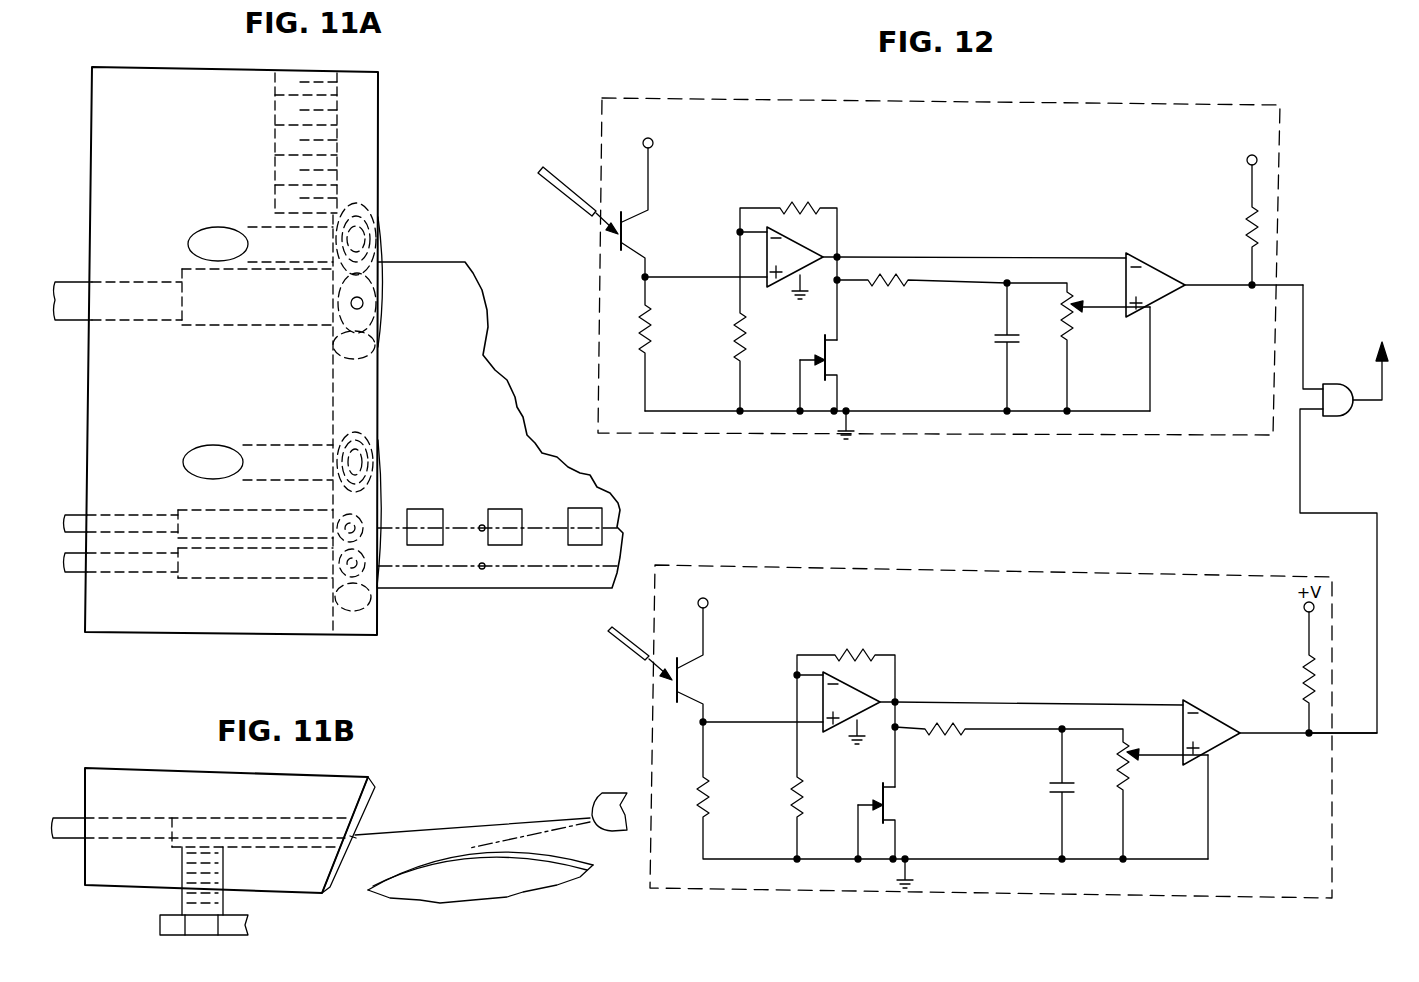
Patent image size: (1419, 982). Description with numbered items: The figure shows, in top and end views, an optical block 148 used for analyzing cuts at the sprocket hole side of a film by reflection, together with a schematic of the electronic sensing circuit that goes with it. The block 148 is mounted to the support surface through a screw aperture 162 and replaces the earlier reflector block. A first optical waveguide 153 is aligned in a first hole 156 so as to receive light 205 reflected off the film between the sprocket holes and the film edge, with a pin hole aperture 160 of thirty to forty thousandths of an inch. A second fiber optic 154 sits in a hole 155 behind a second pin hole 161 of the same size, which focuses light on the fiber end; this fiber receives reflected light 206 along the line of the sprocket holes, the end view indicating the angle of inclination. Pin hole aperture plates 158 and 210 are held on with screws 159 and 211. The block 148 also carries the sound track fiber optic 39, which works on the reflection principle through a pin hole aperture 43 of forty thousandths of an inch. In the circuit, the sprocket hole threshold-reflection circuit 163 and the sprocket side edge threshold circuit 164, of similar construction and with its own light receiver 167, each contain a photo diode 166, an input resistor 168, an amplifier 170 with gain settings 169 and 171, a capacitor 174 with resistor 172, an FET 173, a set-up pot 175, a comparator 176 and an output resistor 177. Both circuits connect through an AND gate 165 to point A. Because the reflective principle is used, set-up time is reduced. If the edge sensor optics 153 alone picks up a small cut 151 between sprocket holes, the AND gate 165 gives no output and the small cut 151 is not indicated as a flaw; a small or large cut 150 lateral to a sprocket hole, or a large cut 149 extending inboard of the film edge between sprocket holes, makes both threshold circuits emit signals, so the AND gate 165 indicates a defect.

In FIG. 11A, the optical block 148 is at (153, 66).
In FIG. 11B, the optical block 148 is at (115, 764).
In FIG. 11A, the screw aperture 162 is at (283, 147).
In FIG. 11A, the screw 211 is at (368, 225).
In FIG. 11A, the pin hole aperture plate 210 is at (378, 268).
In FIG. 11A, the pin hole aperture 43 is at (362, 303).
In FIG. 11A, the sound track fiber optic 39 is at (135, 300).
In FIG. 11A, the screw 159 is at (352, 466).
In FIG. 11A, the pin hole aperture plate 158 is at (368, 502).
In FIG. 11A, the reflected light 206 is at (388, 528).
In FIG. 11A, the second fiber optic 154 is at (78, 520).
In FIG. 12, the second fiber optic 154 is at (572, 185).
In FIG. 11A, the hole 155 is at (210, 512).
In FIG. 11A, the second pin hole 161 is at (348, 524).
In FIG. 11A, the first optical waveguide 153 is at (75, 568).
In FIG. 12, the first optical waveguide 153 is at (614, 638).
In FIG. 11A, the first hole 156 is at (210, 578).
In FIG. 11A, the pin hole aperture 160 is at (352, 567).
In FIG. 11A, the reflected light 205 is at (398, 565).
In FIG. 11A, the small cut 151 is at (463, 545).
In FIG. 11A, the cut lateral to a sprocket hole 150 is at (503, 547).
In FIG. 11A, the large cut 149 is at (550, 513).
In FIG. 12, the sprocket hole threshold-reflection circuit 163 is at (1215, 105).
In FIG. 12, the sprocket side edge threshold circuit 164 is at (1205, 573).
In FIG. 12, the AND gate 165 is at (1337, 384).
In FIG. 12, the photo diode 166 is at (624, 234).
In FIG. 12, the phototransistor 167 is at (681, 683).
In FIG. 12, the input resistor 168 is at (648, 328).
In FIG. 12, the gain setting 169 is at (743, 343).
In FIG. 12, the amplifier 170 is at (826, 252).
In FIG. 12, the gain setting 171 is at (820, 208).
In FIG. 12, the resistor 172 is at (889, 290).
In FIG. 12, the FET 173 is at (829, 353).
In FIG. 12, the capacitor 174 is at (1001, 343).
In FIG. 12, the set-up pot 175 is at (1062, 327).
In FIG. 12, the comparator 176 is at (1153, 275).
In FIG. 12, the output resistor 177 is at (1245, 232).